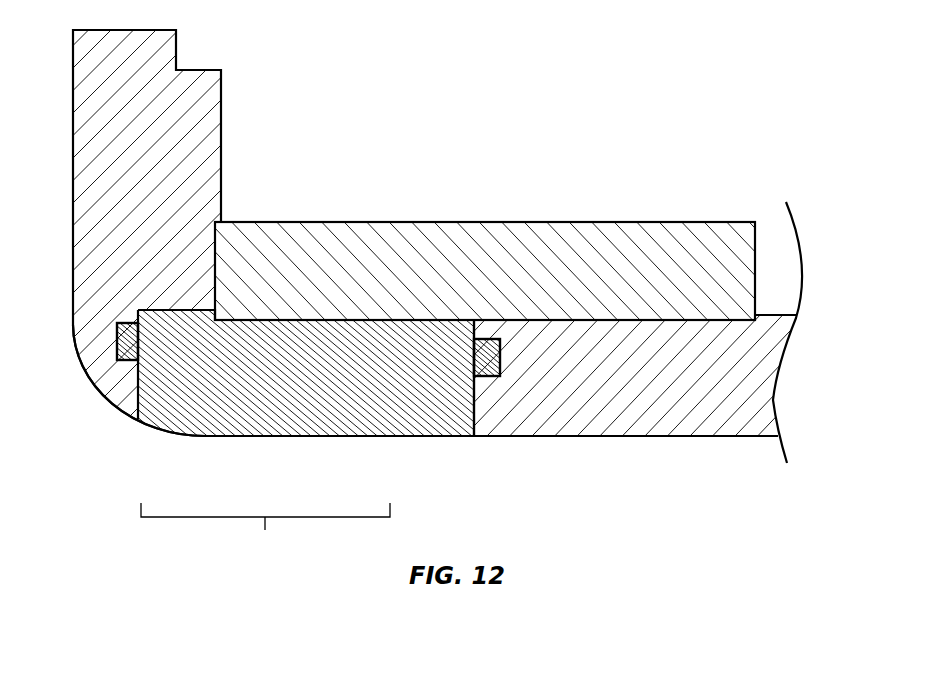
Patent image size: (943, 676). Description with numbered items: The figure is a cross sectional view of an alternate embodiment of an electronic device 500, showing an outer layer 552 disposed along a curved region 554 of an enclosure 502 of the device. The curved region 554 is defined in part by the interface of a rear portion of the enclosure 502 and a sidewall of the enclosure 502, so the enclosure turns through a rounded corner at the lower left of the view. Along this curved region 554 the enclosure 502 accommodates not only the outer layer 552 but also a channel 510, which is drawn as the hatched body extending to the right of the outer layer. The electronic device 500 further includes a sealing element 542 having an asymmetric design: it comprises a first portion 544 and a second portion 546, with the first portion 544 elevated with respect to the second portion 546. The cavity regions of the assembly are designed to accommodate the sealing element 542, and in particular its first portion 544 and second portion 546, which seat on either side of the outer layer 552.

The electronic device 500 is at (784, 94).
The enclosure 502 is at (140, 185).
The channel 510 is at (453, 447).
The sealing element 542 is at (265, 529).
The first portion 544 is at (126, 361).
The second portion 546 is at (476, 377).
The outer layer 552 is at (322, 394).
The curved region 554 is at (98, 431).